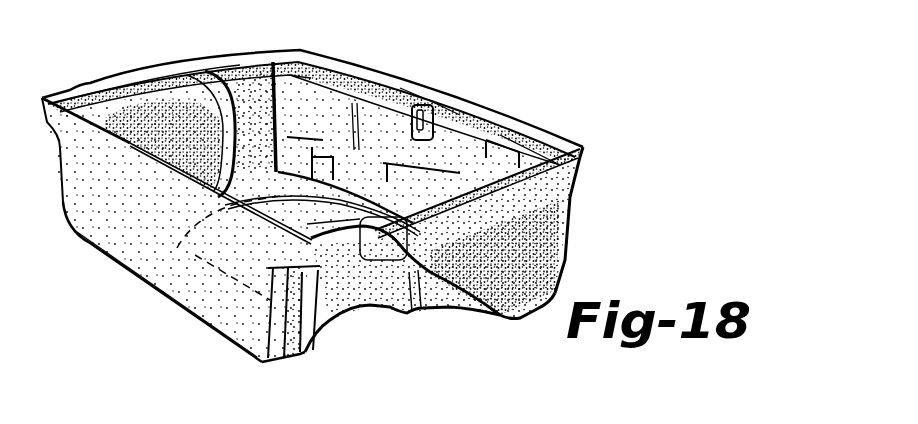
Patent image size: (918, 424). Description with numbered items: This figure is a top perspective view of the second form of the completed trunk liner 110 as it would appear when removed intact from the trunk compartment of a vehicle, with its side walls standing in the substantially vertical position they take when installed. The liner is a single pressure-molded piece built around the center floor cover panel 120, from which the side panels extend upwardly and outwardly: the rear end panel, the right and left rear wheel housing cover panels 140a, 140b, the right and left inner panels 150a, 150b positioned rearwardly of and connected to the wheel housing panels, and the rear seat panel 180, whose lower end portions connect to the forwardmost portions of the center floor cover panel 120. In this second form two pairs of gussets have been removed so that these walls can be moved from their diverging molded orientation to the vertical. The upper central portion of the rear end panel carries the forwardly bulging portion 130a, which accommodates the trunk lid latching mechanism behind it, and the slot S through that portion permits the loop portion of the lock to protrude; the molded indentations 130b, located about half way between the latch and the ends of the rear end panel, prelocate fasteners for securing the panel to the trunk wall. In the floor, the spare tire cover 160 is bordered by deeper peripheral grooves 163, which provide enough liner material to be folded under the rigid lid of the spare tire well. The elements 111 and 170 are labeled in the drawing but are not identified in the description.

The trunk liner 110 is at (532, 97).
The side wall edge 111 is at (547, 220).
The center floor cover panel 120 is at (284, 197).
The forwardly bulging portion 130a is at (433, 105).
The indentations 130b is at (311, 115).
The right rear wheel housing cover panel 140a is at (99, 106).
The left rear wheel housing cover panel 140b is at (283, 353).
The right inner panel 150a is at (248, 63).
The left inner panel 150b is at (543, 247).
The spare tire cover 160 is at (340, 225).
The grooves 163 is at (282, 196).
The arched cutout 170 is at (370, 307).
The rear seat panel 180 is at (183, 287).
The slot S is at (412, 107).